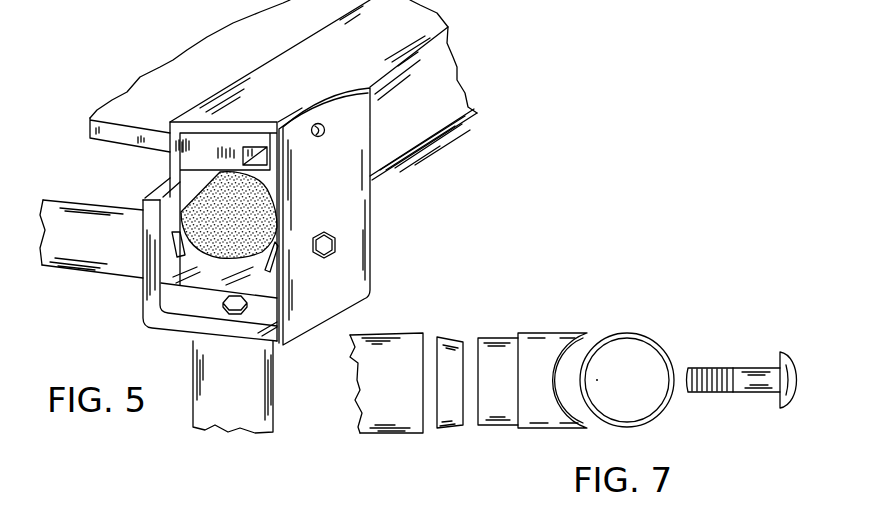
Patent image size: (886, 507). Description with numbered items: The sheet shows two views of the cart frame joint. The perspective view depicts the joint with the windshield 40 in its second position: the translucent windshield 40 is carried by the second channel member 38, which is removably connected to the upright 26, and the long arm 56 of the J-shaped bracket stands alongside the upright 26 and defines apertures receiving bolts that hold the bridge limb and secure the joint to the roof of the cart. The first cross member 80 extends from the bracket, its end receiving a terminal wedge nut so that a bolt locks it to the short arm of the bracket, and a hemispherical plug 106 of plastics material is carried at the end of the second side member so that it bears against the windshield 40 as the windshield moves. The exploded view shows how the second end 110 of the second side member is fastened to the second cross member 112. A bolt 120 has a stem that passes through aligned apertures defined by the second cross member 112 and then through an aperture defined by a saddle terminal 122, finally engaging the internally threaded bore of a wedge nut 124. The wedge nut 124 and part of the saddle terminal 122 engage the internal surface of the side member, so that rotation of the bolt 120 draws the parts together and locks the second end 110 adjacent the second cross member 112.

In FIG. 5, the translucent windshield 40 is at (222, 50).
In FIG. 5, the second channel member 38 is at (423, 140).
In FIG. 5, the long arm 56 is at (357, 262).
In FIG. 5, the hemispherical plug 106 is at (275, 242).
In FIG. 5, the first cross member 80 is at (112, 265).
In FIG. 5, the upright 26 is at (273, 363).
In FIG. 7, the second end 110 is at (408, 428).
In FIG. 7, the wedge nut 124 is at (452, 427).
In FIG. 7, the saddle terminal 122 is at (541, 338).
In FIG. 7, the second cross member 112 is at (657, 335).
In FIG. 7, the bolt 120 is at (758, 392).